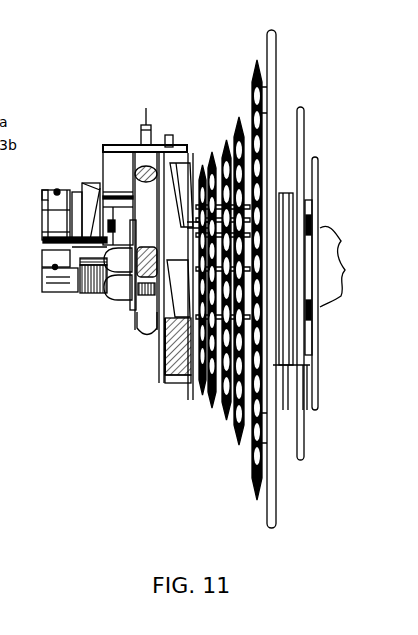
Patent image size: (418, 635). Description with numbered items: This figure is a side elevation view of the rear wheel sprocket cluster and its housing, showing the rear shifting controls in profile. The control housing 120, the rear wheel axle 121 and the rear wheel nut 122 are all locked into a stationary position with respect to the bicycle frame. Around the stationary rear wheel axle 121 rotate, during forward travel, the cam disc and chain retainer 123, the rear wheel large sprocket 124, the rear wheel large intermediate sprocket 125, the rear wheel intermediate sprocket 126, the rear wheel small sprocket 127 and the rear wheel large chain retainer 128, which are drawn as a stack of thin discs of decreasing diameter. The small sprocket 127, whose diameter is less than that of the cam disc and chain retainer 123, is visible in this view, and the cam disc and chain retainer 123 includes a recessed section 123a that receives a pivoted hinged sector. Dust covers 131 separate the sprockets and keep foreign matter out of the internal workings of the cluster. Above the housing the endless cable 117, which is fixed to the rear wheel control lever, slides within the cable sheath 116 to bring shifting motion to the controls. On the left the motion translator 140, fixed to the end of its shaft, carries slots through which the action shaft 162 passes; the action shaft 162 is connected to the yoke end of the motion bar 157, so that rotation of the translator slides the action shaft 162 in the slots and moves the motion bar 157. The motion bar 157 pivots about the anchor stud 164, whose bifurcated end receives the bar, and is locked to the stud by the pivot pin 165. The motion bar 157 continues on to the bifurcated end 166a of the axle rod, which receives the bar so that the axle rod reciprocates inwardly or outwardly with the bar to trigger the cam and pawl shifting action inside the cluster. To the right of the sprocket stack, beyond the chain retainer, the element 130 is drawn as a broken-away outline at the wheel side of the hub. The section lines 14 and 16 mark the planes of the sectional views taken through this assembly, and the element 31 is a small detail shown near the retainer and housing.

The section line 14- 14 is at (195, 513).
The section line 16- 16 is at (170, 130).
The cable end 31 is at (140, 328).
The cable sheath 116 is at (141, 136).
The endless cable 117 is at (142, 113).
The control housing 120 is at (103, 149).
The rear wheel axle 121 is at (90, 294).
The rear wheel nut 122 is at (110, 309).
The cam disc and chain retainer 123 is at (165, 362).
The recessed section 123a is at (165, 342).
The rear wheel large sprocket 124 is at (255, 58).
The rear wheel large intermediate sprocket 125 is at (241, 117).
The rear wheel intermediate sprocket 126 is at (229, 142).
The rear wheel small sprocket 127 is at (212, 152).
The rear wheel large chain retainer 128 is at (277, 137).
The hub flange 130 is at (340, 266).
The dust covers 131 is at (204, 400).
The motion translator 140 is at (42, 197).
The motion bar 157 is at (53, 262).
The action shaft 162 is at (75, 170).
The anchor stud 164 is at (100, 183).
The pivot pin 165 is at (52, 240).
The bifurcated end 166a is at (44, 293).